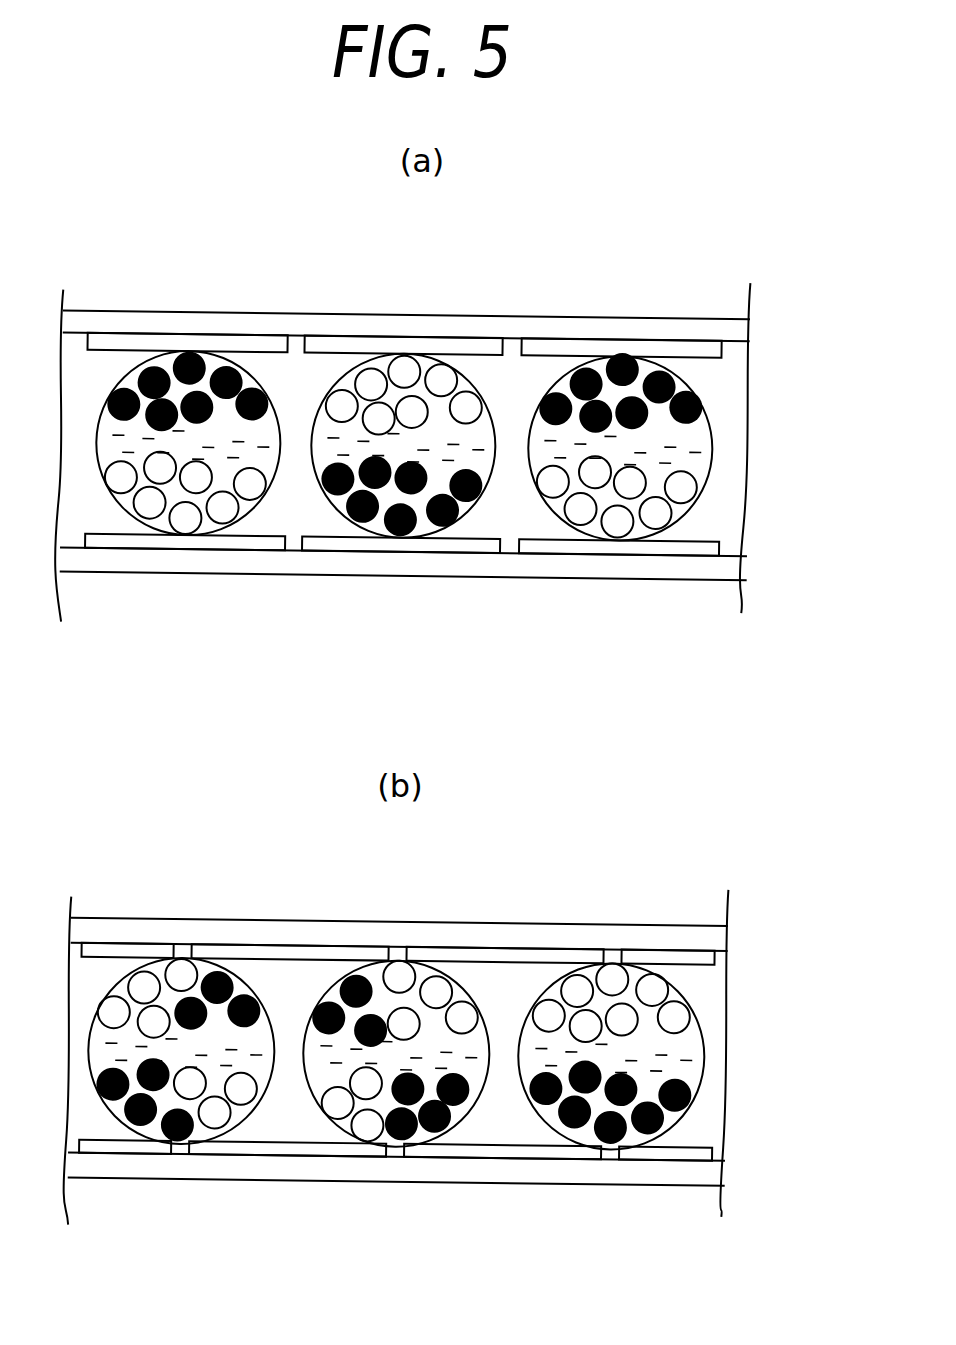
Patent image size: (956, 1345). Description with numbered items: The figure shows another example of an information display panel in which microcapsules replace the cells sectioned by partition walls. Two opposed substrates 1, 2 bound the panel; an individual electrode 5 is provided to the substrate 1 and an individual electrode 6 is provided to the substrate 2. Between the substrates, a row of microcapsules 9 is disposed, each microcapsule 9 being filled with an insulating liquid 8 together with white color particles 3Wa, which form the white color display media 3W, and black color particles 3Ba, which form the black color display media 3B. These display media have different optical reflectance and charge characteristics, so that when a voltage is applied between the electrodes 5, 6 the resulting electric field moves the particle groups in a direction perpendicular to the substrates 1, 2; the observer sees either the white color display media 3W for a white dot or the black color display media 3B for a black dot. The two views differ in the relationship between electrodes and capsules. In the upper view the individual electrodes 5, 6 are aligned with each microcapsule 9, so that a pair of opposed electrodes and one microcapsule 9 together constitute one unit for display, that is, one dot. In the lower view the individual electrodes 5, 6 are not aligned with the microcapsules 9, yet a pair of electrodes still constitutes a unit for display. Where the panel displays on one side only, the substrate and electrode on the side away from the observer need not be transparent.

The substrate 1 is at (508, 560).
The substrate 2 is at (467, 322).
The electrode (individual electrode) 5 is at (583, 547).
The electrode (individual electrode) 6 is at (588, 342).
The insulating liquid 8 is at (673, 441).
The microcapsule 9 is at (253, 372).
The black color display media 3B is at (777, 350).
The white color display media 3W is at (777, 459).
The black color particles 3Ba is at (396, 534).
The white color particles 3Wa is at (403, 366).